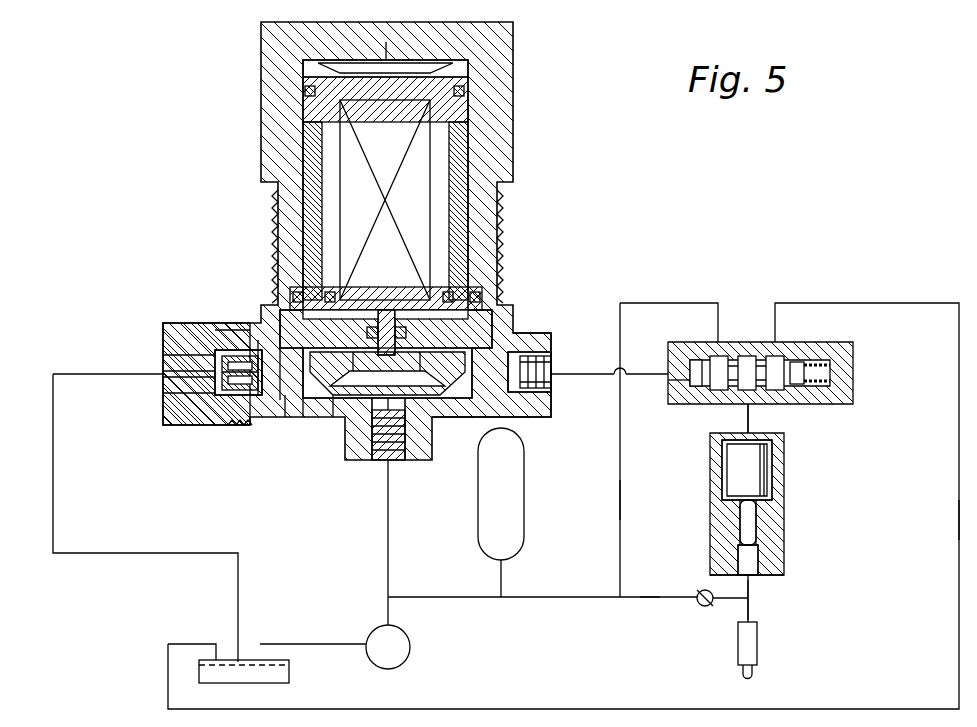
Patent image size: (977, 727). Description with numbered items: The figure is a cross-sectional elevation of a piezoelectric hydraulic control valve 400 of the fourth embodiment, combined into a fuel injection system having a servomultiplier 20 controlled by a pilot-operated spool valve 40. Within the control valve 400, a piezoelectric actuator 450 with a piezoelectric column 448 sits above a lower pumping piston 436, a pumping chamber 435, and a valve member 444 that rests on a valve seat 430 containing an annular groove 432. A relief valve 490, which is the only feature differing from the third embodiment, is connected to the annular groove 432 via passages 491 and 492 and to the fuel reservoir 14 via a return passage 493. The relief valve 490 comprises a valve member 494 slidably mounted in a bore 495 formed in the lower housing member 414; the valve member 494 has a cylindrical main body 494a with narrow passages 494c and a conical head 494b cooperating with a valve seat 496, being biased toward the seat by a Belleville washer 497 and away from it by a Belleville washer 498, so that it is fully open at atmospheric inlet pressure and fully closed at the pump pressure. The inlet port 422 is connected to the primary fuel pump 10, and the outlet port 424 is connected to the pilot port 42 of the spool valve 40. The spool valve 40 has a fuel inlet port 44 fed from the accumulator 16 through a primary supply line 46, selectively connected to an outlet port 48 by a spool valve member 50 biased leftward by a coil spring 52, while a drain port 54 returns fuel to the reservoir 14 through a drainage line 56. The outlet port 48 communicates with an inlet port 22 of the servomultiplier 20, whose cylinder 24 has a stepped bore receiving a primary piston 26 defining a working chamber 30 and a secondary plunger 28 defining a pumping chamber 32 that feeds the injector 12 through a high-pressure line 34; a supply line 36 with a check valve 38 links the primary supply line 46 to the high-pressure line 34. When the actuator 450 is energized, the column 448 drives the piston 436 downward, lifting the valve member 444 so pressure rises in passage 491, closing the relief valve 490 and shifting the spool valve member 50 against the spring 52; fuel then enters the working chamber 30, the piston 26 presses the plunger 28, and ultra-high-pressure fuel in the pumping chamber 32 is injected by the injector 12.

The piezoelectric hydraulic control valve 400 is at (522, 200).
The annular groove 432 is at (278, 186).
The piezoelectric column 448 is at (430, 150).
The piezoelectric actuator 450 is at (337, 165).
The lower pumping piston 436 is at (480, 298).
The valve seat 430 is at (488, 338).
The pumping chamber 435 is at (488, 312).
The valve member 444 is at (472, 392).
The inlet port 422 is at (400, 452).
The lower housing member 414 is at (530, 410).
The outlet port 424 is at (543, 386).
The conical head 494b is at (168, 402).
The valve member 494 is at (205, 415).
The cylindrical main body 494a is at (248, 422).
The valve thread 494c is at (240, 426).
The return passage 493 is at (175, 364).
The valve seat 496 is at (215, 332).
The Belleville washer 498 is at (258, 346).
The bore 495 is at (265, 332).
The relief valve 490 is at (300, 330).
The Belleville washer 497 is at (286, 412).
The passage 491 is at (303, 402).
The passage 492 is at (333, 402).
The fuel reservoir 14 is at (290, 672).
The primary fuel pump 10 is at (411, 649).
The accumulator 16 is at (524, 504).
The supply line 36 is at (642, 598).
The check valve 38 is at (703, 607).
The primary supply line 46 is at (622, 498).
The drainage line 56 is at (958, 522).
The spool valve 40 is at (860, 375).
The pilot port 42 is at (682, 366).
The fuel inlet port 44 is at (722, 350).
The outlet port 48 is at (758, 400).
The drain port 54 is at (778, 356).
The coil spring 52 is at (810, 352).
The spool valve member 50 is at (690, 404).
The working chamber 30 is at (745, 433).
The servomultiplier 20 is at (785, 510).
The inlet port 22 is at (775, 440).
The primary piston 26 is at (768, 472).
The secondary plunger 28 is at (740, 532).
The cylinder 24 is at (778, 557).
The pumping chamber 32 is at (762, 576).
The high-pressure line 34 is at (760, 612).
The injector 12 is at (758, 652).